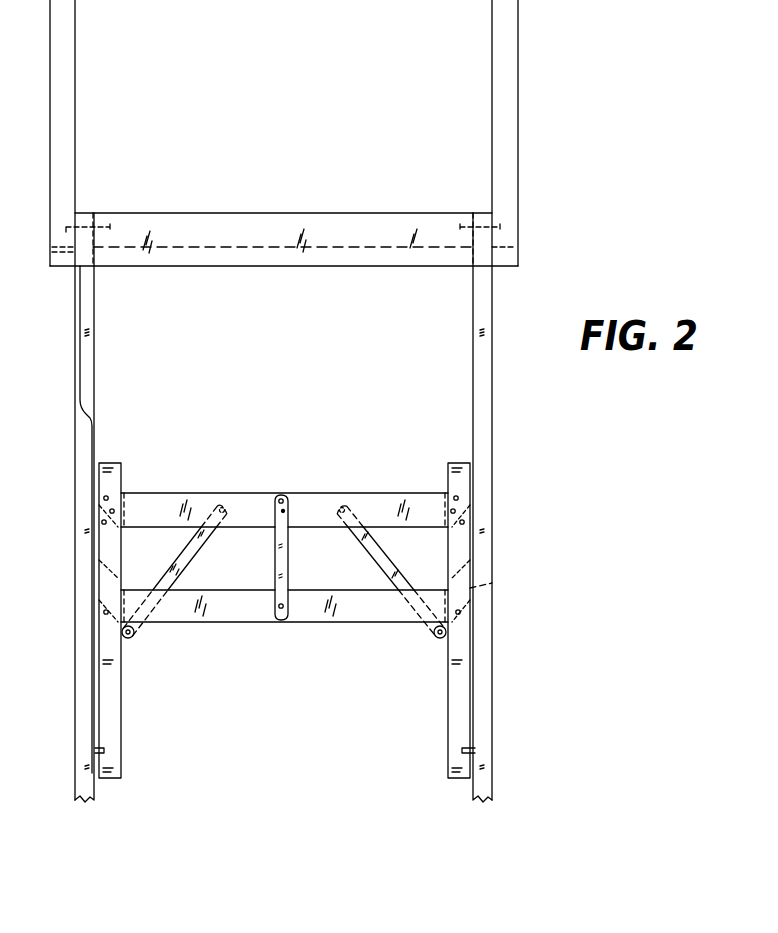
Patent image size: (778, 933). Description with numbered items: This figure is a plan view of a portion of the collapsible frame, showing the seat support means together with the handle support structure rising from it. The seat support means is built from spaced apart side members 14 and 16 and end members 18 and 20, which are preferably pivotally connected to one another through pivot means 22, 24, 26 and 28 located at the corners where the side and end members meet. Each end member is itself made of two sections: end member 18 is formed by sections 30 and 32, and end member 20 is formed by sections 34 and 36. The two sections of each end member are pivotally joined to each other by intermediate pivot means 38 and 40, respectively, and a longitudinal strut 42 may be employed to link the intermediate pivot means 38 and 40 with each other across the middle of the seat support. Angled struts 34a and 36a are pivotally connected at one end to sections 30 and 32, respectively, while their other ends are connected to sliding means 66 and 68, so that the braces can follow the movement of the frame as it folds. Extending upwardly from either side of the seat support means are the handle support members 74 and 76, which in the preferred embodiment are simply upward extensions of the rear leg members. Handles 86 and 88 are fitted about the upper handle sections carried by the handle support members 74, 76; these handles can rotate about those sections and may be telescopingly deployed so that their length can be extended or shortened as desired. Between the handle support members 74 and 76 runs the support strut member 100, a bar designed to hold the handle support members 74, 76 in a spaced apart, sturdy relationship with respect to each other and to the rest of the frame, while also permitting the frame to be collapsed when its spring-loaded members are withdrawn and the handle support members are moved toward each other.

The side member 14 is at (460, 557).
The side member 16 is at (108, 550).
The end member 18 is at (166, 495).
The end member 20 is at (183, 613).
The pivot means 22 is at (105, 498).
The pivot means 24 is at (470, 497).
The pivot means 26 is at (472, 592).
The pivot means 28 is at (105, 594).
The section 30 is at (254, 495).
The section 32 is at (385, 495).
The section 34 is at (238, 615).
The angled strut 34a is at (386, 542).
The section 36 is at (358, 617).
The angled strut 36a is at (197, 548).
The intermediate pivot means 38 is at (285, 511).
The intermediate pivot means 40 is at (300, 606).
The longitudinal strut 42 is at (286, 556).
The sliding means 66 is at (437, 638).
The sliding means 68 is at (133, 640).
The handle support member 74 is at (493, 367).
The handle support member 76 is at (81, 346).
The handle 86 is at (497, 81).
The handle 88 is at (68, 95).
The support strut member 100 is at (222, 258).